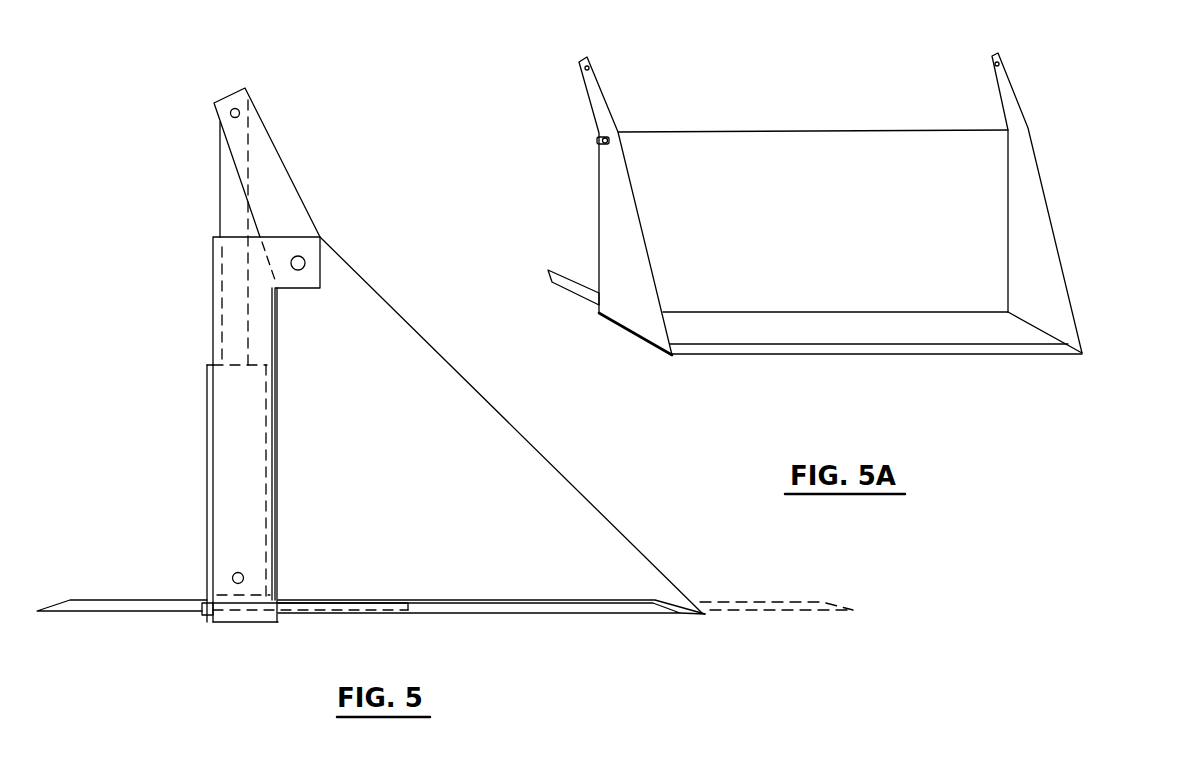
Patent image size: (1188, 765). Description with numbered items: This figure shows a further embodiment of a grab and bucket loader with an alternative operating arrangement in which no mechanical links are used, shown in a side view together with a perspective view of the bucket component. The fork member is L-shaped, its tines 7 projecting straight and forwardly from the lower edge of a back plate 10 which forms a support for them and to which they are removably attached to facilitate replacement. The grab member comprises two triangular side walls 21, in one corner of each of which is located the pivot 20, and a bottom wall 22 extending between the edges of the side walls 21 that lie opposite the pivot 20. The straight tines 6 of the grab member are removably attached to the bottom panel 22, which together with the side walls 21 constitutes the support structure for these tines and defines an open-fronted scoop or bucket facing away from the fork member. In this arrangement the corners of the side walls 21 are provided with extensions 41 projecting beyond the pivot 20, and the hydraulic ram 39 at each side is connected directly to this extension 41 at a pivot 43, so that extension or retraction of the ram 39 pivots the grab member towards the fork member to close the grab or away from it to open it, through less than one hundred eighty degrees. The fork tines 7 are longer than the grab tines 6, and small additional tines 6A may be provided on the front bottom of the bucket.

In FIG. 5, the tines 6 is at (135, 602).
In FIG. 5, the small additional tines 6A is at (797, 610).
In FIG. 5, the tines 7 is at (542, 610).
In FIG. 5A, the back plate 10 is at (817, 223).
In FIG. 5A, the pivot 20 is at (600, 141).
In FIG. 5, the side walls 21 is at (425, 493).
In FIG. 5A, the side walls 21 is at (612, 222).
In FIG. 5A, the bottom wall 22 is at (897, 340).
In FIG. 5, the hydraulic ram 39 is at (232, 440).
In FIG. 5, the extension 41 is at (273, 178).
In FIG. 5A, the extension 41 is at (590, 82).
In FIG. 5, the pivot 43 is at (240, 112).